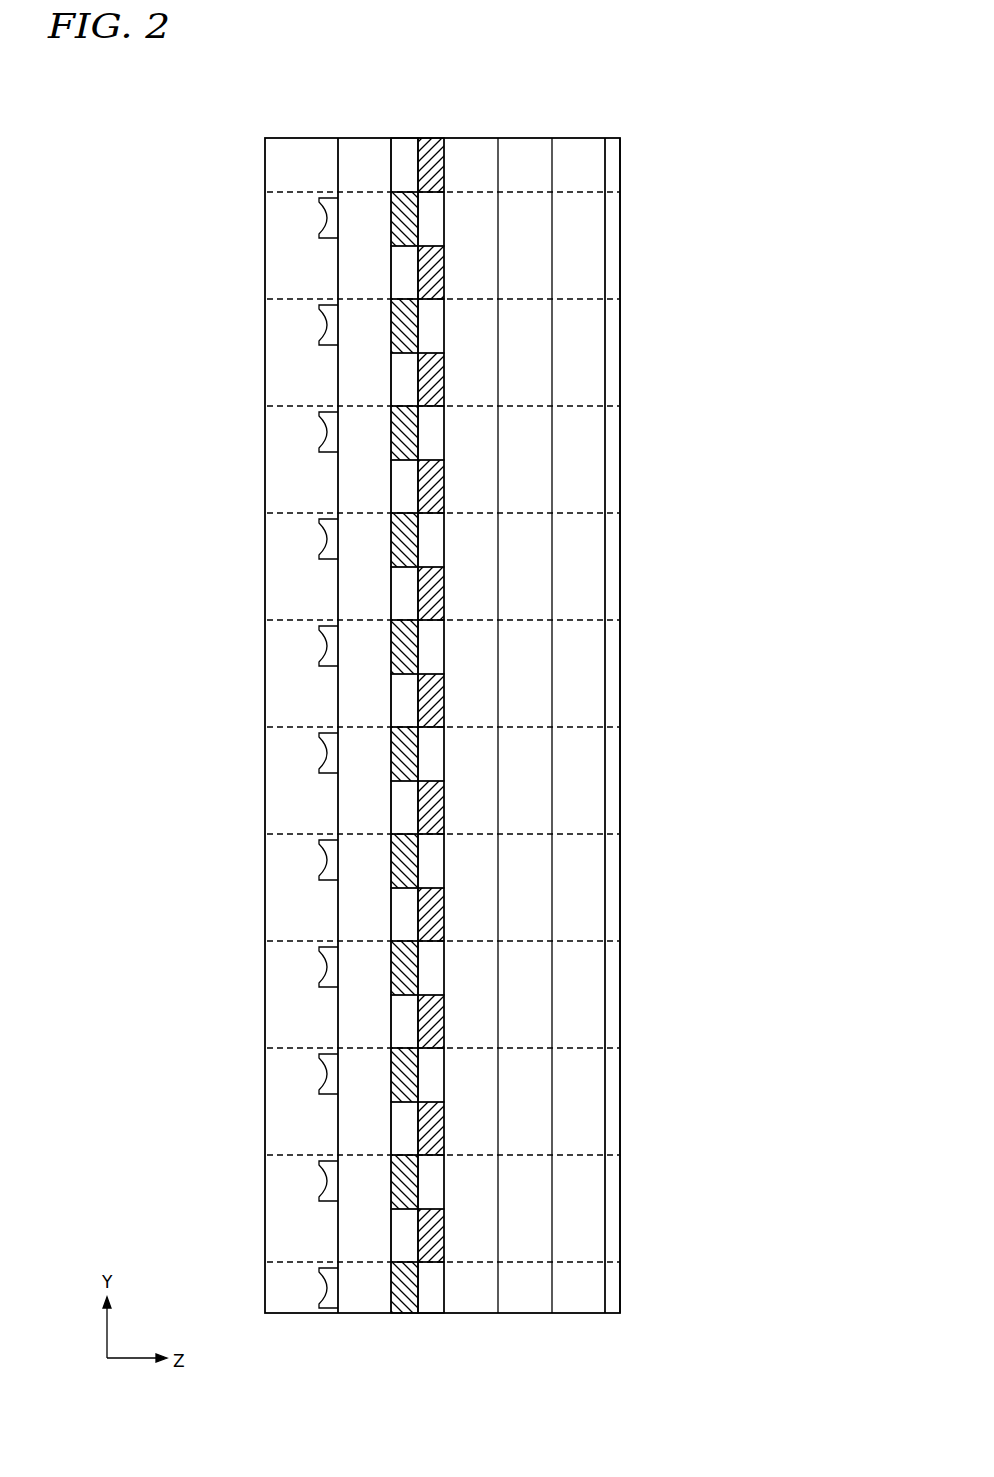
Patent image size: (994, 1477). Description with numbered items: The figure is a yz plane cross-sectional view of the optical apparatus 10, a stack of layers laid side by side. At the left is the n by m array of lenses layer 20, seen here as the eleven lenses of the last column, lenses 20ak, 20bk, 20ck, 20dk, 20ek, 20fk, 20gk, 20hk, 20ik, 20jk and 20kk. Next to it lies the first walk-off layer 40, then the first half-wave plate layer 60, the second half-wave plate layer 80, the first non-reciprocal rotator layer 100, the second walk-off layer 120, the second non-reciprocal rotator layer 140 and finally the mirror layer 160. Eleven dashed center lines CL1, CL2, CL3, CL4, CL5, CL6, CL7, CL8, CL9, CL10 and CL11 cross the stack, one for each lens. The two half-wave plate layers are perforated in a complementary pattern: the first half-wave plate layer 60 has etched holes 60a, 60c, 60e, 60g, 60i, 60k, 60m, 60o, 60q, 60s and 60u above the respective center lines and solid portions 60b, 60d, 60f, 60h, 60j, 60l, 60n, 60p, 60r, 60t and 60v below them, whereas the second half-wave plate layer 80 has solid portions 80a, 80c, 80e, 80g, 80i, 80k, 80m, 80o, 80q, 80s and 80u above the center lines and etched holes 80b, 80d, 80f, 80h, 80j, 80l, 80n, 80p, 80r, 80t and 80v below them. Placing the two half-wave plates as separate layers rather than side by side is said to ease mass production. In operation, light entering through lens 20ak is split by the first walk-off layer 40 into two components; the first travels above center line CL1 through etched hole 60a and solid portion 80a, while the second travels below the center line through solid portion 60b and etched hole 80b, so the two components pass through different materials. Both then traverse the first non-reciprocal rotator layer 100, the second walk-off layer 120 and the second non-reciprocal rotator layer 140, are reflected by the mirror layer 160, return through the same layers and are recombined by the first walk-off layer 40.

The optical apparatus 10 is at (731, 86).
The n by m array of lenses layer 20 is at (305, 137).
The first walk-off layer 40 is at (366, 137).
The first half-wave plate layer 60 is at (406, 137).
The etched hole 60a is at (398, 137).
The second half-wave plate layer 80 is at (427, 137).
The solid portion 80a is at (441, 137).
The first non-reciprocal rotator layer 100 is at (472, 137).
The second walk-off layer 120 is at (527, 137).
The second non-reciprocal rotator layer 140 is at (578, 137).
The mirror layer 160 is at (618, 137).
The lens 20ak is at (322, 220).
The lens 20bk is at (322, 327).
The lens 20ck is at (322, 434).
The lens 20dk is at (322, 541).
The lens 20ek is at (322, 648).
The lens 20fk is at (322, 755).
The lens 20gk is at (322, 862).
The lens 20hk is at (322, 969).
The lens 20ik is at (322, 1076).
The lens 20jk is at (322, 1183).
The lens 20kk is at (322, 1290).
The solid portion 60b is at (393, 219).
The etched hole 60c is at (393, 272).
The solid portion 60d is at (393, 326).
The etched hole 60e is at (393, 379).
The solid portion 60f is at (393, 433).
The etched hole 60g is at (393, 486).
The solid portion 60h is at (393, 540).
The etched hole 60i is at (393, 593).
The solid portion 60j is at (393, 647).
The etched hole 60k is at (393, 700).
The solid portion 60l is at (393, 754).
The etched hole 60m is at (393, 807).
The solid portion 60n is at (393, 861).
The etched hole 60o is at (393, 914).
The solid portion 60p is at (393, 968).
The etched hole 60q is at (393, 1021).
The solid portion 60r is at (393, 1075).
The etched hole 60s is at (393, 1128).
The solid portion 60t is at (393, 1182).
The etched hole 60u is at (393, 1235).
The solid portion 60v is at (393, 1289).
The etched hole 80b is at (440, 219).
The solid portion 80c is at (440, 272).
The etched hole 80d is at (440, 326).
The solid portion 80e is at (440, 379).
The etched hole 80f is at (440, 433).
The solid portion 80g is at (440, 486).
The etched hole 80h is at (440, 540).
The solid portion 80i is at (440, 593).
The etched hole 80j is at (440, 647).
The solid portion 80k is at (440, 700).
The etched hole 80l is at (440, 754).
The solid portion 80m is at (440, 807).
The etched hole 80n is at (440, 861).
The solid portion 80o is at (440, 914).
The etched hole 80p is at (440, 968).
The solid portion 80q is at (440, 1021).
The etched hole 80r is at (440, 1075).
The solid portion 80s is at (440, 1128).
The etched hole 80t is at (440, 1182).
The solid portion 80u is at (440, 1235).
The etched hole 80v is at (440, 1289).
The center line CL1 is at (285, 192).
The center line CL2 is at (285, 299).
The center line CL3 is at (285, 406).
The center line CL4 is at (285, 513).
The center line CL5 is at (285, 620).
The center line CL6 is at (285, 727).
The center line CL7 is at (285, 834).
The center line CL8 is at (285, 941).
The center line CL9 is at (285, 1048).
The center line CL10 is at (285, 1155).
The center line CL11 is at (285, 1262).